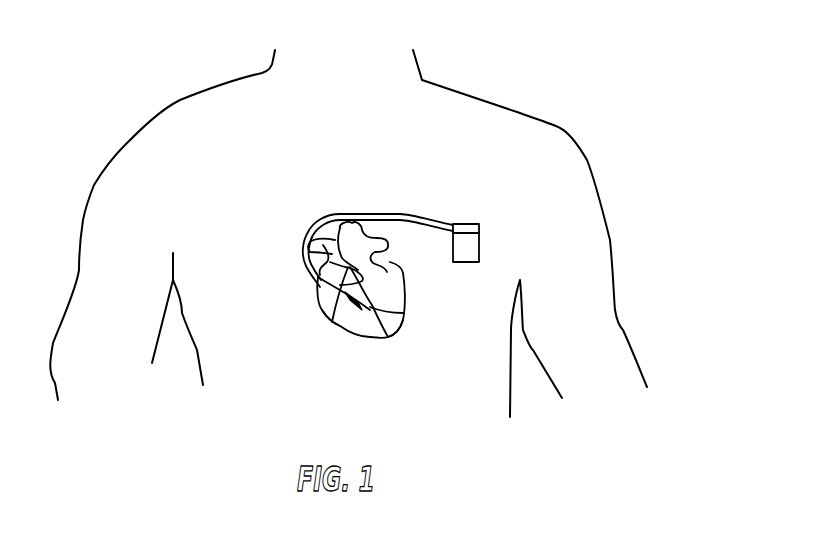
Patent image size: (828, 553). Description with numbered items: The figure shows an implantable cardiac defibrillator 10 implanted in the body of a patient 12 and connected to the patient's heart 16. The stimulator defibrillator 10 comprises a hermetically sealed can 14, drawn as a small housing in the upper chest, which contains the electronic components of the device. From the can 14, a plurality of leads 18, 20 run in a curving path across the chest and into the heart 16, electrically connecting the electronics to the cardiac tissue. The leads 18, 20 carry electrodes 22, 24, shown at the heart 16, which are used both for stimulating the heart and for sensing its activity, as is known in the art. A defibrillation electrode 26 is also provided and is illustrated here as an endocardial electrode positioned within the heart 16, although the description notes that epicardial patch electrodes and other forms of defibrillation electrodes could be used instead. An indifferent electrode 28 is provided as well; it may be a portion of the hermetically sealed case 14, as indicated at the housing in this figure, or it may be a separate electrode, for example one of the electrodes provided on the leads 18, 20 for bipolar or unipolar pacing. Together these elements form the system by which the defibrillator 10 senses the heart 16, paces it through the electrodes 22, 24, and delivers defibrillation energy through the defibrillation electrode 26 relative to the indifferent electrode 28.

The implantable cardiac defibrillator 10 is at (419, 215).
The patient 12 is at (560, 73).
The hermetically sealed can 14 is at (480, 240).
The heart 16 is at (318, 310).
The lead 18 is at (352, 213).
The lead 20 is at (397, 212).
The electrode 22 is at (393, 266).
The electrode 24 is at (407, 314).
The defibrillation electrode 26 is at (333, 318).
The indifferent electrode 28 is at (480, 253).